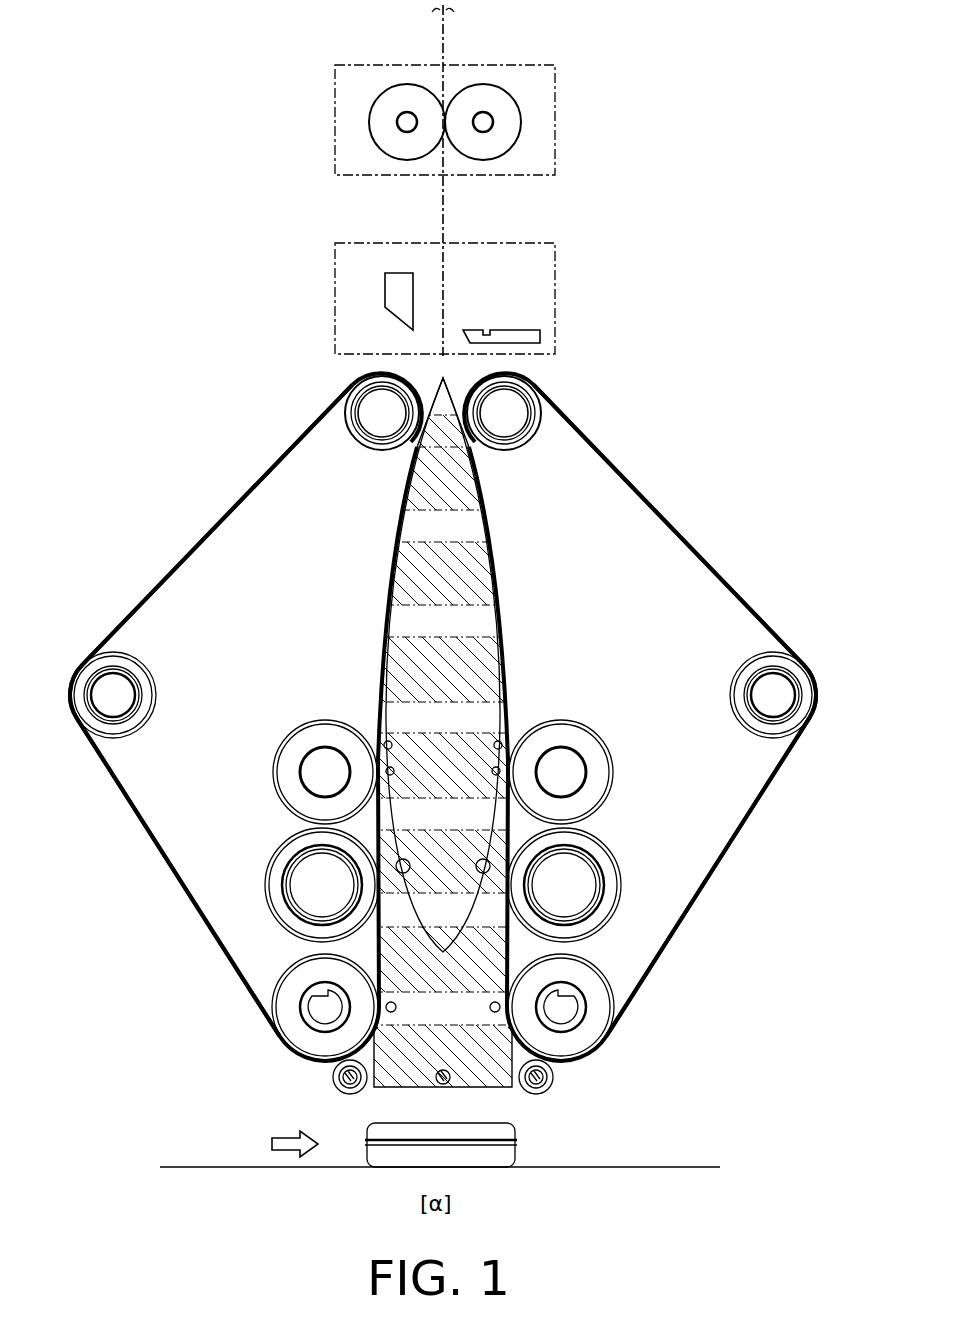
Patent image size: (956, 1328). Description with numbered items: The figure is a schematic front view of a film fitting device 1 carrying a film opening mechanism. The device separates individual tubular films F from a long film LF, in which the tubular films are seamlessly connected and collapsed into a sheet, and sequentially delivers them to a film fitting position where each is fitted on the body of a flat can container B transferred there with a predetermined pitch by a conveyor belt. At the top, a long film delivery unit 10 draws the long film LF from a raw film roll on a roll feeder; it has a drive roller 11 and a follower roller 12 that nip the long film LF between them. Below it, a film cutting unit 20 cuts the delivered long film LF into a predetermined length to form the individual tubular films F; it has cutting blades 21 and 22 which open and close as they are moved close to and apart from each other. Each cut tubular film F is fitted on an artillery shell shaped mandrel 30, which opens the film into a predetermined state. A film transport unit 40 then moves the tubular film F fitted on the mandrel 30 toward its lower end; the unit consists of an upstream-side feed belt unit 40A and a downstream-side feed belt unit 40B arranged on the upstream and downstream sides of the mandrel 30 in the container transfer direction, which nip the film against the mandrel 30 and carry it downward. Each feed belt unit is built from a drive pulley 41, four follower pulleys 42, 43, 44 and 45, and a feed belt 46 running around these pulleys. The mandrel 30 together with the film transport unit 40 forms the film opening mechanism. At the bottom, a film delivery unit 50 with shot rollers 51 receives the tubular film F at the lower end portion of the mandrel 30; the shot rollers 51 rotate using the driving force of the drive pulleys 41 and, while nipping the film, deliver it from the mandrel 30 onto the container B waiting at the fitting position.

The film fitting device 1 is at (181, 62).
The long film delivery unit 10 is at (333, 119).
The drive roller 11 is at (405, 94).
The follower roller 12 is at (485, 94).
The long film LF is at (448, 208).
The film cutting unit 20 is at (333, 297).
The cutting blade 21 is at (402, 285).
The cutting blade 22 is at (506, 336).
The mandrel 30 is at (461, 731).
The tubular film F is at (470, 636).
The film transport unit 40 is at (443, 717).
The upstream-side feed belt unit 40A is at (295, 440).
The downstream-side feed belt unit 40B is at (596, 448).
The drive pulley 41 is at (295, 1016).
The follower pulley 42 is at (150, 689).
The follower pulley 43 is at (371, 452).
The follower pulley 44 is at (288, 773).
The follower pulley 45 is at (271, 888).
The feed belt 46 is at (150, 835).
The film delivery unit 50 is at (395, 1096).
The shot roller 51 is at (336, 1083).
The container B is at (505, 1156).